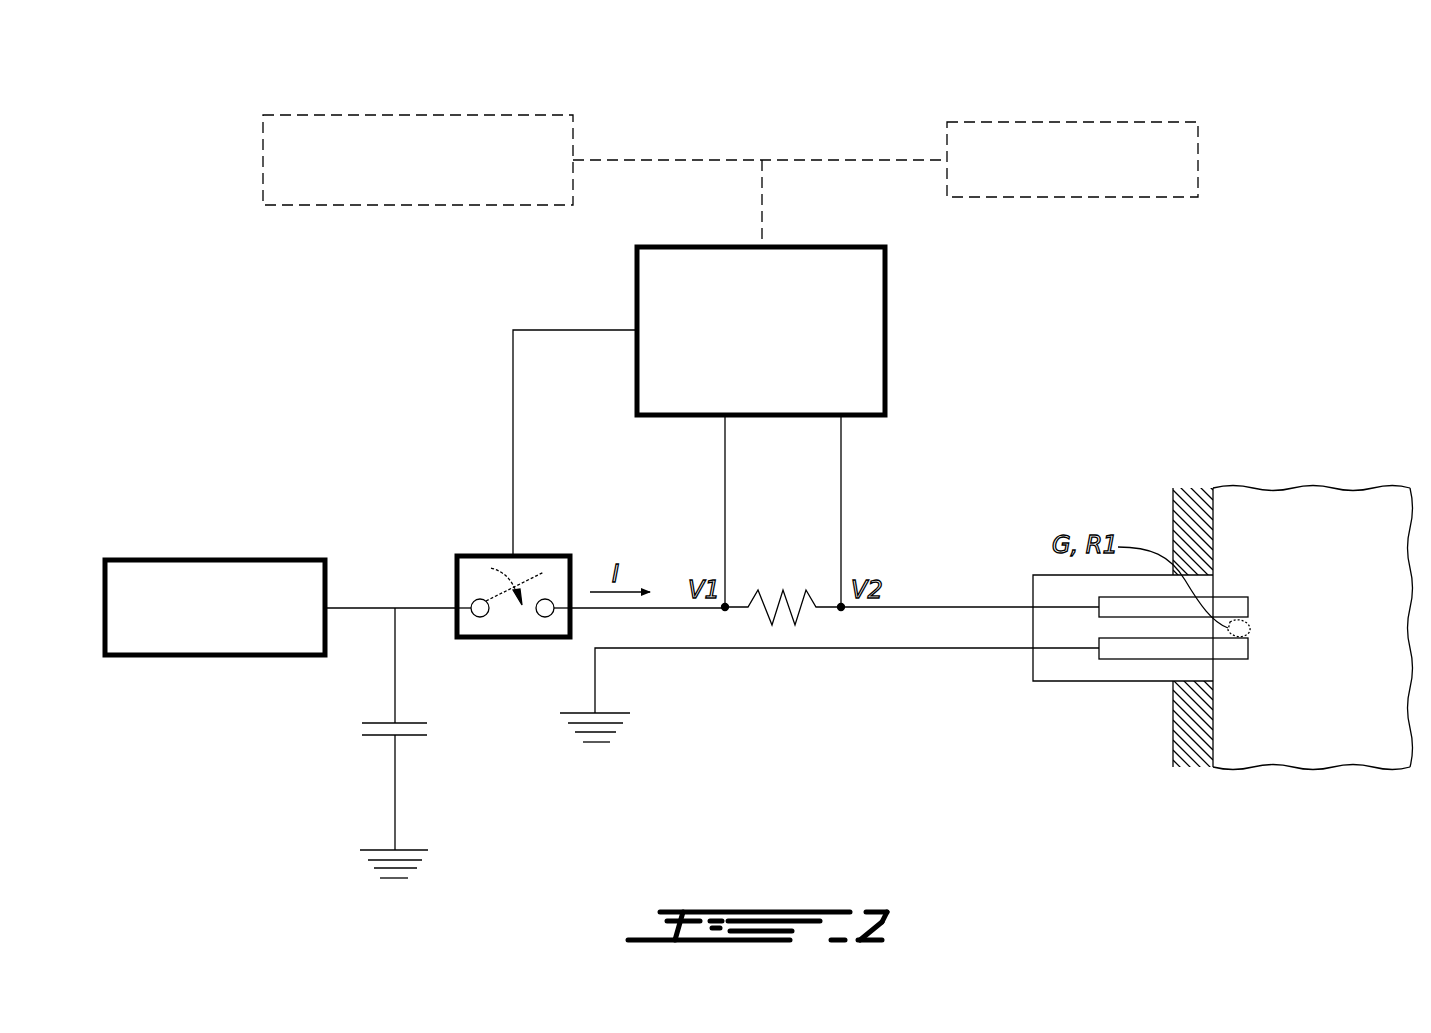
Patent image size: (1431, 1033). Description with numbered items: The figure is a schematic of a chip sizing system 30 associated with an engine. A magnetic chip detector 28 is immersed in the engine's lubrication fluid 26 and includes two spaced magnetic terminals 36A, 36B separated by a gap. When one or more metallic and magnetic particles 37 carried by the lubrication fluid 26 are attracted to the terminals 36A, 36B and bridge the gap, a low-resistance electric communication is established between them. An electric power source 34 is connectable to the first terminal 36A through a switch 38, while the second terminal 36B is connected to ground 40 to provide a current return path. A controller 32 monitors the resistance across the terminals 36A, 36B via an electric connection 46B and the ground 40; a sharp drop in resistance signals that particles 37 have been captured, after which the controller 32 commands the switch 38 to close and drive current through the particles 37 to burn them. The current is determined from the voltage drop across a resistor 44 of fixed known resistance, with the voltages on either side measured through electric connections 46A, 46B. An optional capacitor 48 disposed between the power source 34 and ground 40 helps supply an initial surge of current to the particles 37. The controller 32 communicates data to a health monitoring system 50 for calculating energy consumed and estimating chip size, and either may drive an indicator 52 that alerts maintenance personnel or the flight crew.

The lubrication fluid 26 is at (1365, 575).
The magnetic chip detector 28 is at (1068, 682).
The chip sizing system 30 is at (1304, 116).
The controller 32 is at (885, 290).
The electric power source 34 is at (216, 560).
The first magnetic terminal 36A is at (1238, 597).
The second magnetic terminal 36B is at (1238, 660).
The metallic and magnetic particle 37 is at (1249, 627).
The switch 38 is at (510, 637).
The ground 40 is at (622, 718).
The resistor 44 is at (793, 598).
The electric connection 46A is at (725, 483).
The electric connection 46B is at (842, 497).
The capacitor 48 is at (360, 727).
The health monitoring system 50 is at (415, 205).
The indicator 52 is at (1073, 197).